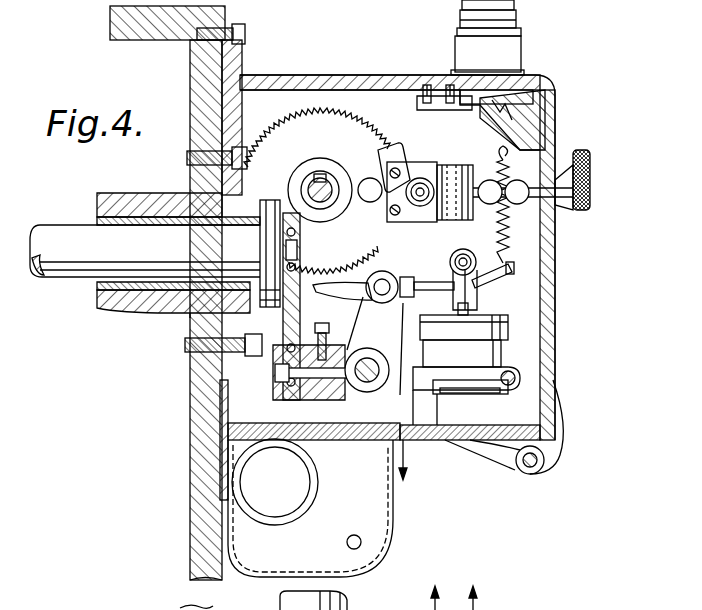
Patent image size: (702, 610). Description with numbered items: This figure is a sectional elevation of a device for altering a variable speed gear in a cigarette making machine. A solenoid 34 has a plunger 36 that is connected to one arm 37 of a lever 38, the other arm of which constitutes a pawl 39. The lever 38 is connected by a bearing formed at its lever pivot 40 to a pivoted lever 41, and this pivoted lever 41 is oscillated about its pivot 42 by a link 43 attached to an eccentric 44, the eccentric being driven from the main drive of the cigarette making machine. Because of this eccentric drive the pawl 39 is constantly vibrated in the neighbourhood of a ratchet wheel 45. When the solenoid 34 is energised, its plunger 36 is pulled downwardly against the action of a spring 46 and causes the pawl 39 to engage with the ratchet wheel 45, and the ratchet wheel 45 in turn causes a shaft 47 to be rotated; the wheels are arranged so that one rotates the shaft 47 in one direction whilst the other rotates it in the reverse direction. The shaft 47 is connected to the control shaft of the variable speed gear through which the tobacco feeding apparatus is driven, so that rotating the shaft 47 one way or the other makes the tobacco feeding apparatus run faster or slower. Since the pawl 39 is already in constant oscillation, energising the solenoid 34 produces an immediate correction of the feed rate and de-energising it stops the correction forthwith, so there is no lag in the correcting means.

The solenoid 34 is at (500, 352).
The plunger 36 is at (477, 294).
The arm 37 is at (510, 272).
The lever 38 is at (408, 285).
The pawl 39 is at (344, 302).
The lever pivot 40 is at (386, 282).
The pivoted lever 41 is at (388, 339).
The pivot 42 is at (360, 393).
The link 43 is at (325, 392).
The eccentric 44 is at (262, 240).
The ratchet wheel 45 is at (330, 139).
The spring 46 is at (508, 240).
The shaft 47 is at (306, 187).